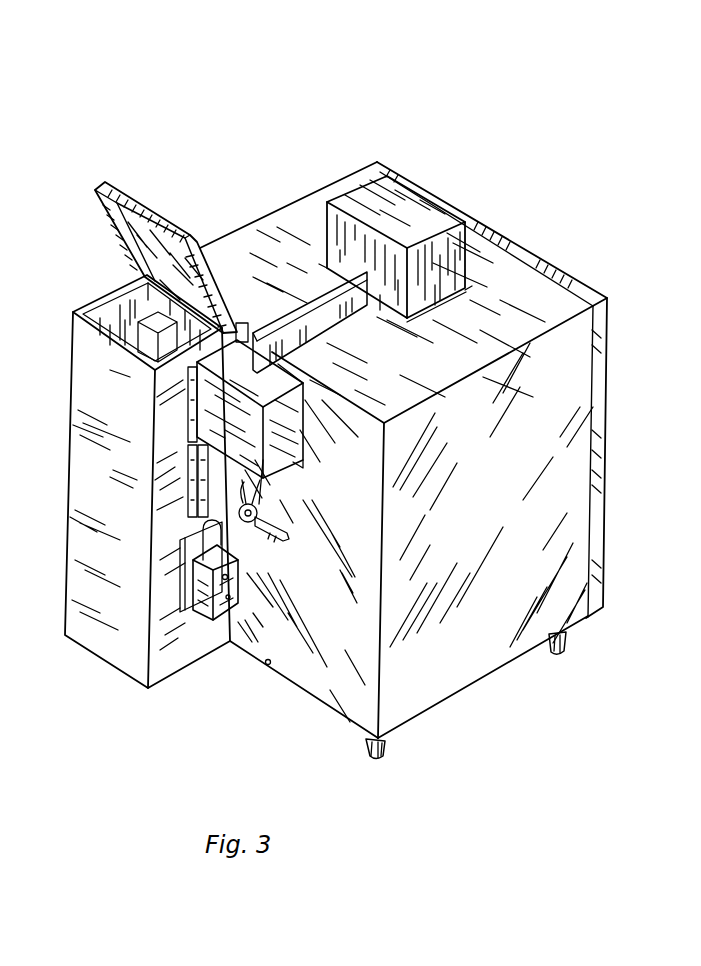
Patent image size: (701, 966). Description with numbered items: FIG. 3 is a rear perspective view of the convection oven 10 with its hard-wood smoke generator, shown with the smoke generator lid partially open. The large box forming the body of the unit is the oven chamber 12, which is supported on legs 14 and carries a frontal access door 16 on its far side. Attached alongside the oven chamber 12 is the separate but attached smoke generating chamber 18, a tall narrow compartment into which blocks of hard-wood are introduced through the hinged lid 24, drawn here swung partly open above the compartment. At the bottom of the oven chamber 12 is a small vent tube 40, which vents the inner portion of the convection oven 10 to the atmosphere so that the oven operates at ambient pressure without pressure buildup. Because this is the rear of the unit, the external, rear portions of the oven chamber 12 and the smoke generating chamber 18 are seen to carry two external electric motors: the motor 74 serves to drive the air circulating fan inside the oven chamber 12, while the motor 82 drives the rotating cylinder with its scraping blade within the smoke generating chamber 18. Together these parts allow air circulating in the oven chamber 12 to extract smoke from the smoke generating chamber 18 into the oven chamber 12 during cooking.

The convection oven 10 is at (457, 86).
The oven chamber 12 is at (232, 243).
The legs 14 is at (385, 743).
The frontal access door 16 is at (527, 260).
The smoke generating chamber 18 is at (80, 385).
The hinged lid 24 is at (140, 207).
The vent tube 40 is at (266, 666).
The external electric motor 74 is at (263, 518).
The external electric motor 82 is at (233, 585).